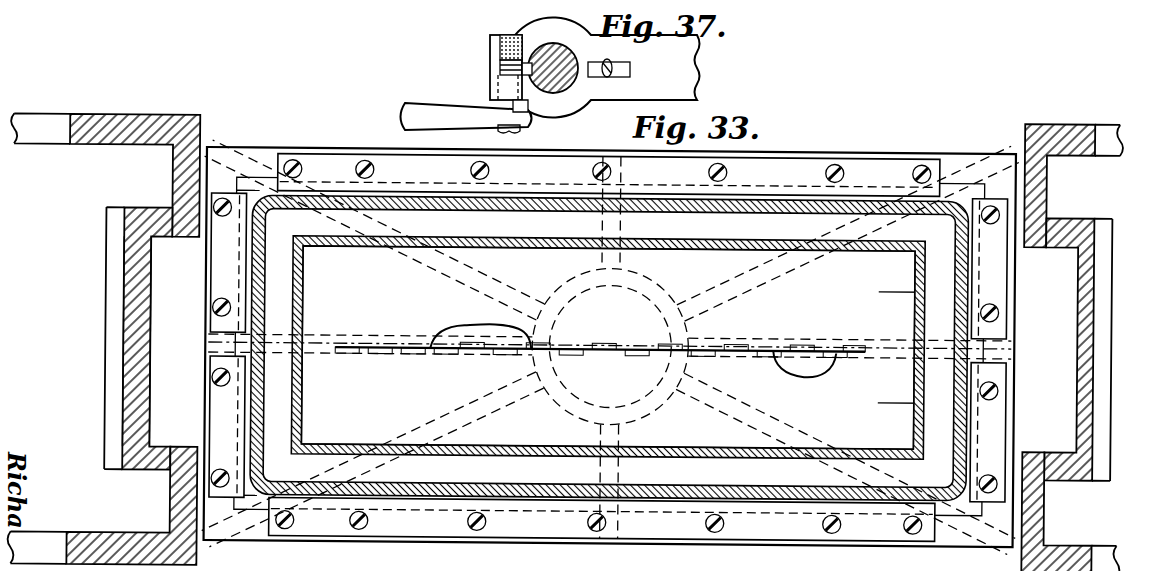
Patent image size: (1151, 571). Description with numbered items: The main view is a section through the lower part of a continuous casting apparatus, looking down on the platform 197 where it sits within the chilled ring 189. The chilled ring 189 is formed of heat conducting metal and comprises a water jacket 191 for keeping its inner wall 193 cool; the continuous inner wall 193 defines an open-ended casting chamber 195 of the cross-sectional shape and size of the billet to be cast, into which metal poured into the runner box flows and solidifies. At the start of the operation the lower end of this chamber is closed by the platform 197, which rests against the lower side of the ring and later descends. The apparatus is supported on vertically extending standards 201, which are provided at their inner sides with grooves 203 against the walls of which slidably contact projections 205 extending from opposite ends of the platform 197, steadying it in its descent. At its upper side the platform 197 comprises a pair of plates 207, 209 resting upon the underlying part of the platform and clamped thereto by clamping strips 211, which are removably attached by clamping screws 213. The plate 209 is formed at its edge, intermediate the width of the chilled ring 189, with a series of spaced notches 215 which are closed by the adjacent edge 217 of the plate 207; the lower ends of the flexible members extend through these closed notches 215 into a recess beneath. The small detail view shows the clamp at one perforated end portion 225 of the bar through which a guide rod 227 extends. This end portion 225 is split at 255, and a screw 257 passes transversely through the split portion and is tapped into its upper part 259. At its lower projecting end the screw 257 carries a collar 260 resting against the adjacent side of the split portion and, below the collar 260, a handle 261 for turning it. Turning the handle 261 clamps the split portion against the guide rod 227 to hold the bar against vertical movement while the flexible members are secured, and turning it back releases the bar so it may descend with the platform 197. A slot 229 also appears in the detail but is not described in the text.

In FIG. 33, the chilled ring 189 is at (308, 193).
In FIG. 33, the water jacket 191 is at (514, 216).
In FIG. 33, the inner wall 193 is at (362, 237).
In FIG. 33, the casting chamber 195 is at (367, 416).
In FIG. 33, the platform 197 is at (229, 143).
In FIG. 33, the standards 201 is at (148, 112).
In FIG. 33, the grooves 203 is at (152, 280).
In FIG. 33, the projections 205 is at (167, 308).
In FIG. 33, the plate 207 is at (258, 180).
In FIG. 33, the plate 209 is at (262, 501).
In FIG. 33, the clamping strips 211 is at (206, 275).
In FIG. 33, the clamping screws 213 is at (374, 167).
In FIG. 37, the clamping screws 213 is at (400, 148).
In FIG. 33, the notches 215 is at (483, 353).
In FIG. 33, the edge 217 is at (815, 350).
In FIG. 37, the perforated end portion 225 is at (590, 112).
In FIG. 37, the guide rods 227 is at (548, 60).
In FIG. 37, the slot 229 is at (612, 62).
In FIG. 37, the split 255 is at (498, 64).
In FIG. 37, the screw 257 is at (500, 69).
In FIG. 37, the upper part 259 is at (499, 46).
In FIG. 37, the collar 260 is at (528, 112).
In FIG. 37, the handle 261 is at (428, 108).